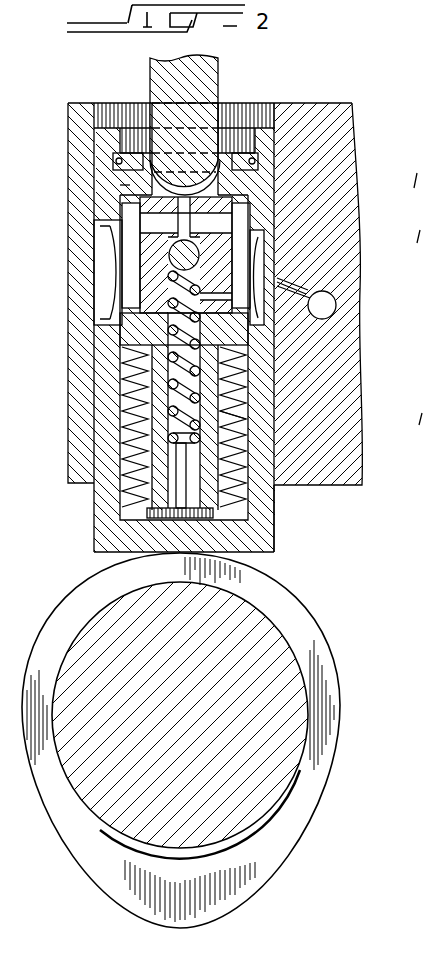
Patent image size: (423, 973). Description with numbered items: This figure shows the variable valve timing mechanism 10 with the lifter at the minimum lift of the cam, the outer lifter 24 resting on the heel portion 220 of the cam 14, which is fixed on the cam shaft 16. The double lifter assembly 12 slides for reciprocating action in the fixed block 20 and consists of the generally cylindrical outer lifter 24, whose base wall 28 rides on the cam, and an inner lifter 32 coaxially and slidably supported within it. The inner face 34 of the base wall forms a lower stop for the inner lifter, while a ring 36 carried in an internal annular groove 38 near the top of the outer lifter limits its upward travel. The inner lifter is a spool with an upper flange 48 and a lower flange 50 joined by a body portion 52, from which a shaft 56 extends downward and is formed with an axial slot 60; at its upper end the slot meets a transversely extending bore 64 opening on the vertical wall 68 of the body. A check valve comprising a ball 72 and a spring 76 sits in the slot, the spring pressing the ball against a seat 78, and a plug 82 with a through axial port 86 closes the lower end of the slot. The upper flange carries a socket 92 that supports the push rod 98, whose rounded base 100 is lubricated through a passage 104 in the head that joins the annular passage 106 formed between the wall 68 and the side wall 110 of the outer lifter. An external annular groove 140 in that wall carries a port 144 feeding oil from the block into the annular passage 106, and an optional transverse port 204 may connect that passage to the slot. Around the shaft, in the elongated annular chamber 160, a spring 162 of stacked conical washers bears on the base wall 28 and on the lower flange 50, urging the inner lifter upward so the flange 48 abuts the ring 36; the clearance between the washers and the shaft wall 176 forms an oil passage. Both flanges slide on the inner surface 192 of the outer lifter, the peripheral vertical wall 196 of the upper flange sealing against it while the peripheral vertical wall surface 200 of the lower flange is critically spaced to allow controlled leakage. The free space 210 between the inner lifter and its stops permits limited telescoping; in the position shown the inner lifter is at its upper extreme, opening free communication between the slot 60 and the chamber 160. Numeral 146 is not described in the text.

The timing mechanism 10 is at (345, 505).
The double lifter assembly 12 is at (58, 277).
The cam 14 is at (316, 833).
The cam shaft 16 is at (290, 733).
The block 20 is at (290, 452).
The outer lifter 24 is at (108, 400).
The base wall 28 is at (95, 548).
The inner lifter 32 is at (270, 378).
The inner face 34 is at (262, 532).
The ring 36 is at (250, 165).
The annular groove 38 is at (113, 163).
The upper flange 48 is at (270, 207).
The lower flange 50 is at (125, 352).
The body portion 52 is at (215, 270).
The shaft 56 is at (150, 380).
The slot 60 is at (125, 335).
The transversely extending bore 64 is at (132, 225).
The vertical wall 68 is at (310, 262).
The ball 72 is at (120, 291).
The spring 76 is at (246, 406).
The seat 78 is at (205, 258).
The plug 82 is at (170, 480).
The axial port 86 is at (200, 520).
The socket 92 is at (219, 148).
The push rod 98 is at (212, 72).
The rounded base 100 is at (140, 218).
The passage 104 is at (250, 188).
The annular passage 106 is at (340, 300).
The side wall 110 is at (285, 478).
The annular groove 140 is at (104, 250).
The port 144 is at (325, 272).
The passage 146 is at (322, 336).
The annular chamber 160 is at (290, 490).
The spring 162 is at (255, 517).
The wall 176 is at (250, 505).
The inner surface 192 is at (246, 418).
The peripheral vertical wall 196 is at (120, 188).
The peripheral vertical wall surface 200 is at (262, 372).
The transverse port 204 is at (315, 332).
The free space 210 is at (245, 558).
The heel portion 220 is at (240, 577).